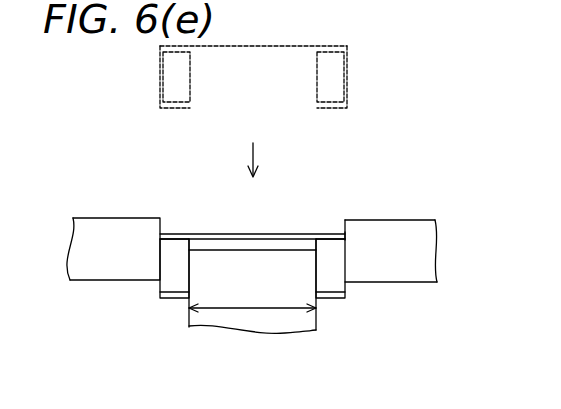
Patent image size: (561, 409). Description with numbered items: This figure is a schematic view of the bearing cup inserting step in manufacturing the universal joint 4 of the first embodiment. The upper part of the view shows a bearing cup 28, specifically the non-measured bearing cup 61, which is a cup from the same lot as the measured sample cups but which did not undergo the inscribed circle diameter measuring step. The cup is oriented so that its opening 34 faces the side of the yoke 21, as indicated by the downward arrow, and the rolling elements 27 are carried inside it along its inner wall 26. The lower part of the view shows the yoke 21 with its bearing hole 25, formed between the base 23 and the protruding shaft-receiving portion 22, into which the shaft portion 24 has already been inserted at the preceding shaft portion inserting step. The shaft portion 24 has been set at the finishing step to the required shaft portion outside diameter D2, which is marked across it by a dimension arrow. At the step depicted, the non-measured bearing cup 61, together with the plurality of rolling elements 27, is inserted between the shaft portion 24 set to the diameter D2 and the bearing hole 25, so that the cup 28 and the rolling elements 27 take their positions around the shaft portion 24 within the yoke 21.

The mounting structure 4 is at (421, 289).
The yoke 21 is at (416, 218).
The protruding portion 22 is at (240, 330).
The recessed portion 23 is at (376, 219).
The shaft portion 24 is at (288, 334).
The bearing hole 25 is at (343, 232).
The leg portion 26 is at (349, 98).
The rolling elements 27 is at (165, 95).
The bearing cup 28 is at (347, 46).
The opening 34 is at (213, 97).
The non-measured bearing cup 61 is at (409, 73).
The required shaft portion outside diameter D2 is at (260, 307).